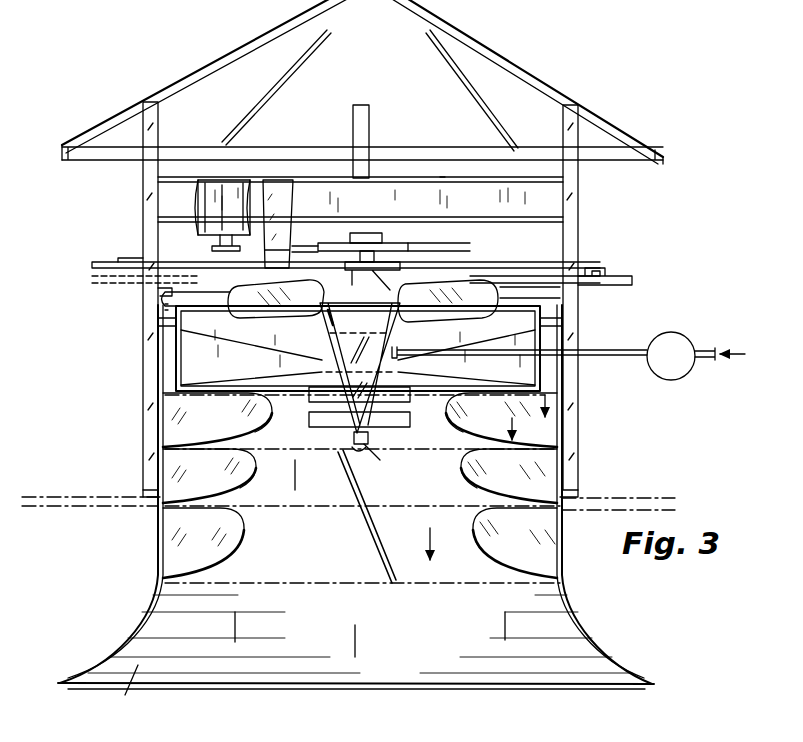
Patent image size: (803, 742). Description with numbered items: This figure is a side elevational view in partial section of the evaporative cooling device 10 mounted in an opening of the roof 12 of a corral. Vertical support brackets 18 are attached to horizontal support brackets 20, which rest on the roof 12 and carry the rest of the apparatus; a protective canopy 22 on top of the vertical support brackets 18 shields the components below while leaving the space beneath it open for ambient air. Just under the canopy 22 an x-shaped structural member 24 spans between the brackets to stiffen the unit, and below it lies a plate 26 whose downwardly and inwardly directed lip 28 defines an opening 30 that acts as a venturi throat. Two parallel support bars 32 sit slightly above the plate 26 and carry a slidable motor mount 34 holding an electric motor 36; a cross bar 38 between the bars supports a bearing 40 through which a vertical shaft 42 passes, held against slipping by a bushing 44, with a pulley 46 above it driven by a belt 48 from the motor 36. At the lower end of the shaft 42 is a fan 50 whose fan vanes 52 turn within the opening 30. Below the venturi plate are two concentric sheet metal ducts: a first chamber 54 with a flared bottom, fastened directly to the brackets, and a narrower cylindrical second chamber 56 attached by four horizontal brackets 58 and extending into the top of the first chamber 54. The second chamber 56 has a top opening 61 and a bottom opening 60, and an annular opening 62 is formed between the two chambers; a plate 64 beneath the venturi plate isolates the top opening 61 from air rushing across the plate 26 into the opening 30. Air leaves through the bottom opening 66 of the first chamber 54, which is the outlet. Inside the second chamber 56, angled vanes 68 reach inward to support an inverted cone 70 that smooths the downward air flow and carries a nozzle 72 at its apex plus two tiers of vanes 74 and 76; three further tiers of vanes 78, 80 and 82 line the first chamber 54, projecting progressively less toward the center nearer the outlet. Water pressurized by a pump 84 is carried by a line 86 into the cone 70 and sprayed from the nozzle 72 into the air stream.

The device 10 is at (604, 68).
The roof 12 is at (630, 498).
The vertical support brackets 18 is at (372, 118).
The horizontal support brackets 20 is at (447, 175).
The protective canopy 22 is at (497, 50).
The x-shaped structural member 24 is at (533, 198).
The plate 26 is at (553, 258).
The lip 28 is at (92, 268).
The opening 30 is at (492, 261).
The support bars 32 is at (132, 258).
The motor mount 34 is at (290, 195).
The electric motor 36 is at (210, 190).
The cross bar 38 is at (347, 250).
The bearing 40 is at (460, 250).
The shaft 42 is at (380, 250).
The bushing 44 is at (385, 262).
The pulley 46 is at (378, 248).
The belt 48 is at (298, 248).
The fan 50 is at (484, 262).
The fan vanes 52 is at (501, 420).
The first duct or chamber 54 is at (160, 352).
The second duct or chamber 56 is at (196, 460).
The horizontally extending brackets 58 is at (160, 322).
The bottom opening 60 is at (209, 513).
The top opening 61 is at (150, 292).
The opening 62 is at (175, 405).
The plate 64 is at (620, 288).
The bottom opening 66 is at (448, 680).
The vanes 68 is at (335, 340).
The inverted cone 70 is at (388, 452).
The nozzle 72 is at (358, 445).
The vanes 74 is at (312, 392).
The vanes 76 is at (333, 423).
The vanes 78 is at (600, 428).
The vanes 80 is at (348, 513).
The vanes 82 is at (352, 565).
The pump 84 is at (681, 340).
The line 86 is at (618, 355).